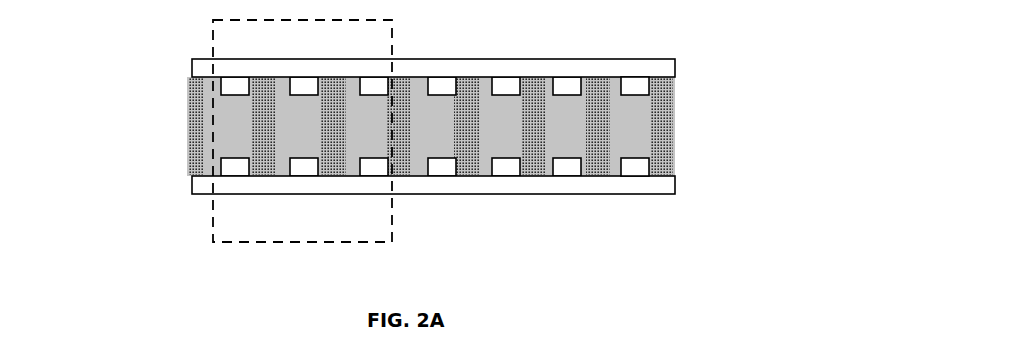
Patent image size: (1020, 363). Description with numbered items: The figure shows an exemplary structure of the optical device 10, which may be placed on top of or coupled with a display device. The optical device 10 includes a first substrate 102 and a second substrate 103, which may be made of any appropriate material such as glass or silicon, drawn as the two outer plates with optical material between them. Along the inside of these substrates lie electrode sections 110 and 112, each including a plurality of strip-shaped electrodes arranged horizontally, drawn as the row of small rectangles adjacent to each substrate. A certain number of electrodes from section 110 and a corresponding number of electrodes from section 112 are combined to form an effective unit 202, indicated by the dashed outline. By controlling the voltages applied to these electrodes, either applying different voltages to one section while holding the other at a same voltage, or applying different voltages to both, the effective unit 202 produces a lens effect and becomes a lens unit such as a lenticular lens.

The optical device 10 is at (600, 22).
The first substrate 102 is at (213, 70).
The second substrate 103 is at (213, 185).
The electrode section 110 is at (635, 87).
The electrode section 112 is at (635, 166).
The effective unit 202 is at (245, 227).